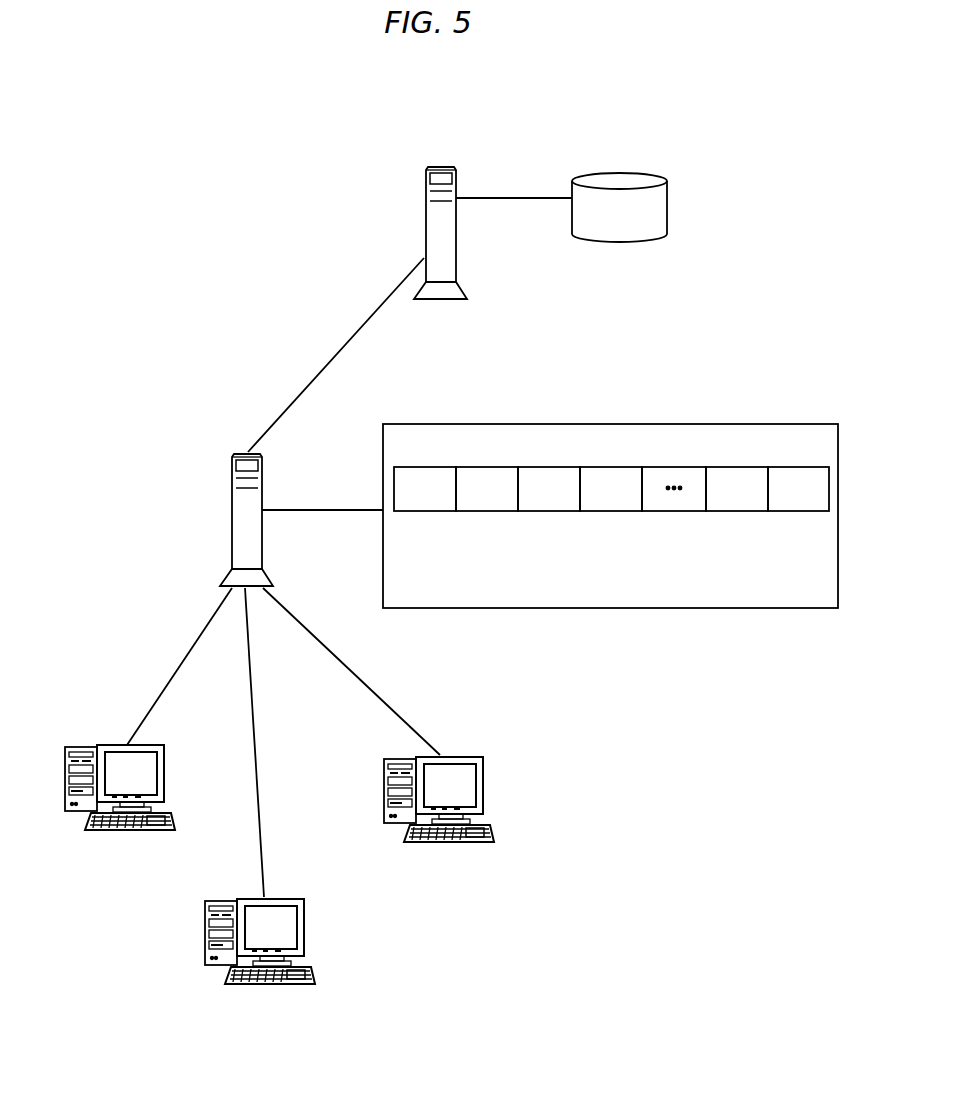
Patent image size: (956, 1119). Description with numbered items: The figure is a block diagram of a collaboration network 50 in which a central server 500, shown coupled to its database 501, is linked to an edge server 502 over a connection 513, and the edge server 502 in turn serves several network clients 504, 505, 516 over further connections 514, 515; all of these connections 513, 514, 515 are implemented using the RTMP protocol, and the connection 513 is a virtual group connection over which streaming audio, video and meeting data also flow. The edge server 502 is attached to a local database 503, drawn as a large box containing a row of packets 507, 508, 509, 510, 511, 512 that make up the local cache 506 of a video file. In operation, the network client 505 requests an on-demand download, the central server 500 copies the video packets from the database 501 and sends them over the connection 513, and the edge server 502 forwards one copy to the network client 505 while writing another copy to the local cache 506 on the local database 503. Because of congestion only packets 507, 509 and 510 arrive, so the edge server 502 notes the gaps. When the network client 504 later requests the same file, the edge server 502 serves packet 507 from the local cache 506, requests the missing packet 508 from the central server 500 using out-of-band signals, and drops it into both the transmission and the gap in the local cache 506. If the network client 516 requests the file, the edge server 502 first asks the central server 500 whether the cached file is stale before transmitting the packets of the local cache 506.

The collaboration network 50 is at (223, 270).
The central server 500 is at (457, 262).
The database 501 is at (600, 229).
The edge server 502 is at (230, 544).
The local database 503 is at (454, 589).
The local cache 506 is at (676, 511).
The packet 507 is at (425, 489).
The packet 508 is at (487, 489).
The packet 509 is at (549, 489).
The packet 510 is at (611, 489).
The packet 511 is at (737, 489).
The packet 512 is at (798, 489).
The connection 513 is at (340, 352).
The connection 514 is at (172, 670).
The connection 515 is at (383, 690).
The network client 504 is at (164, 770).
The network client 505 is at (484, 784).
The network client 516 is at (306, 922).